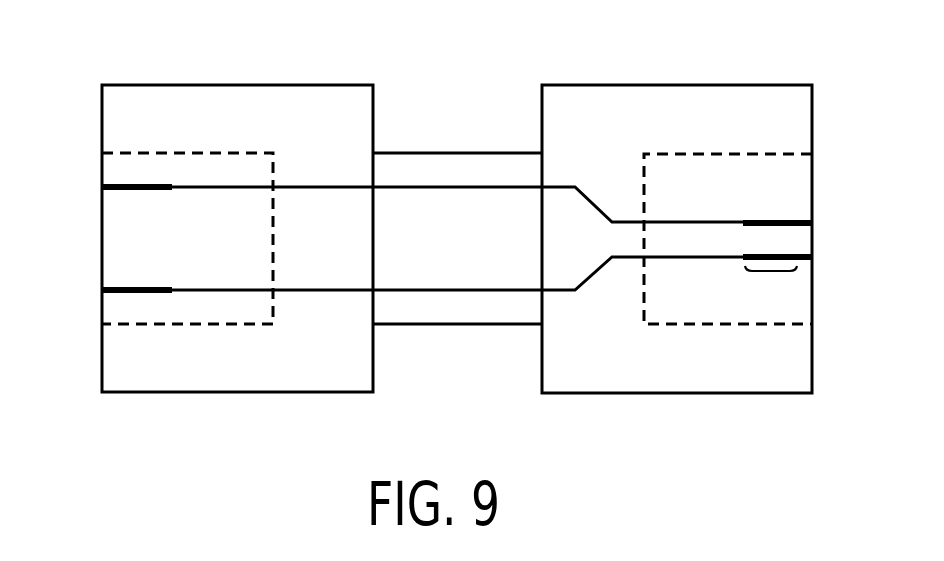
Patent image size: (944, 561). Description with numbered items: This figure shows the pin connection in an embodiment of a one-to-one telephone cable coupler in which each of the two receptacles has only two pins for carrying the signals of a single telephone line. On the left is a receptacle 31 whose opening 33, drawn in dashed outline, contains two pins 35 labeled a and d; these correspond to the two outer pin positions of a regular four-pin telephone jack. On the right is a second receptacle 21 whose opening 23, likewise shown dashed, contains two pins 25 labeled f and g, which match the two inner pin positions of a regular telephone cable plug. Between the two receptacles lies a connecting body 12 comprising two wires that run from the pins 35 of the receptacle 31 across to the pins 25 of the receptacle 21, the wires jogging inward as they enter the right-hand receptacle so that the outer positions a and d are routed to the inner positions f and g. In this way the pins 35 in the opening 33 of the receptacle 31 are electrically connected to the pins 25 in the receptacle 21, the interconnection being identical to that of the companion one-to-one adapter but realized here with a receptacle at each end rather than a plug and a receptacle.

The receptacle 31 is at (239, 100).
The receptacle 21 is at (780, 96).
The connecting body 12 is at (481, 310).
The opening 33 is at (133, 165).
The opening 23 is at (803, 167).
The pins 35 is at (140, 192).
The pins 25 is at (772, 271).
The pin label a is at (95, 190).
The pin label d is at (95, 294).
The pin label f is at (815, 223).
The pin label g is at (815, 258).